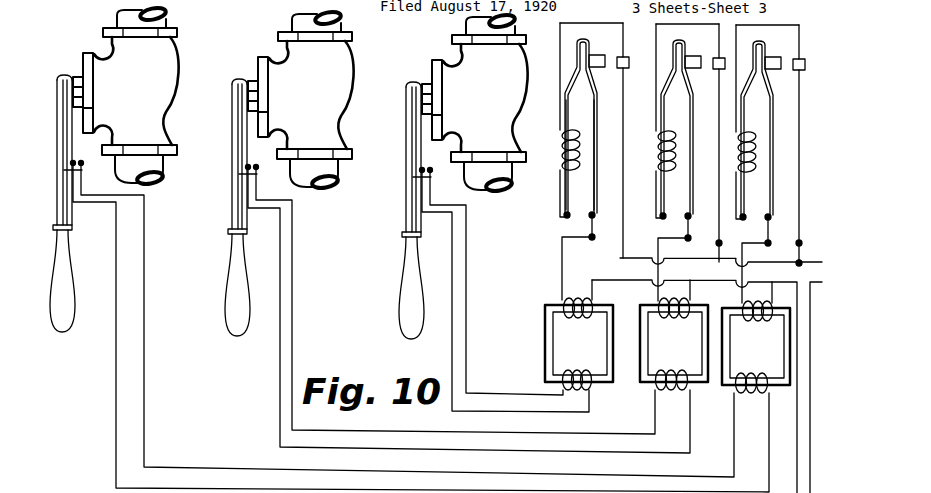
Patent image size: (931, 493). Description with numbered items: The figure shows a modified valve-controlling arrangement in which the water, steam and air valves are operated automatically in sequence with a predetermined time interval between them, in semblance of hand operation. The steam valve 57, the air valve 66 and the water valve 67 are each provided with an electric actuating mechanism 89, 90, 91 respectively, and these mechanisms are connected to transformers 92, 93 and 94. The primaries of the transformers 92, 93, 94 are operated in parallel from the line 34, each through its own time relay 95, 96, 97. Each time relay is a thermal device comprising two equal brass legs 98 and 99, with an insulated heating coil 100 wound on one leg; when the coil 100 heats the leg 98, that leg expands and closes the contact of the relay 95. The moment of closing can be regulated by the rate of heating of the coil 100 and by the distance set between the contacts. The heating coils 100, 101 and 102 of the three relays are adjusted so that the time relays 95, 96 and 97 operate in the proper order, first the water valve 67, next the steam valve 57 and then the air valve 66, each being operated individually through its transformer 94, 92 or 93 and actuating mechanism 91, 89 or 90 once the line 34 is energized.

The line 34 is at (708, 375).
The steam valve 57 is at (126, 96).
The air valve 66 is at (301, 100).
The water valve 67 is at (475, 103).
The electric actuating mechanism 89 is at (409, 283).
The electric actuating mechanism 90 is at (457, 266).
The electric actuating mechanism 91 is at (494, 247).
The transformer 92 is at (579, 335).
The transformer 93 is at (674, 335).
The transformer 94 is at (756, 337).
The time relay 95 is at (594, 161).
The time relay 96 is at (690, 162).
The time relay 97 is at (770, 164).
The brass leg 98 is at (561, 200).
The brass leg 99 is at (597, 137).
The heating coil 100 is at (557, 150).
The heating coil 101 is at (652, 151).
The heating coil 102 is at (733, 158).